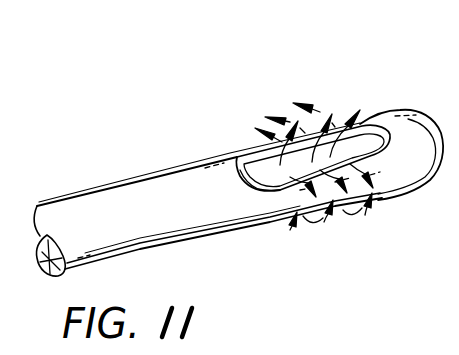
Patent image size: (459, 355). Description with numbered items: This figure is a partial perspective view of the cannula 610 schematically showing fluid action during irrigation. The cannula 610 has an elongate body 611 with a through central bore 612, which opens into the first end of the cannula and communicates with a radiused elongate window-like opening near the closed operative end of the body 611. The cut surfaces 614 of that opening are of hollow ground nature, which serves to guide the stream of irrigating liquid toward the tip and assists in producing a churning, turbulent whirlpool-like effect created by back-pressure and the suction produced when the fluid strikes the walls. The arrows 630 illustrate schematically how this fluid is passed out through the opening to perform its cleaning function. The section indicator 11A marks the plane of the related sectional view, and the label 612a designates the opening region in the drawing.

The cannula 610 is at (182, 162).
The elongate body 611 is at (78, 213).
The central bore 612 is at (62, 277).
The side opening 612a is at (268, 182).
The cut surfaces 614 is at (270, 193).
The arrows 630 is at (322, 225).
The section line 11A is at (309, 93).